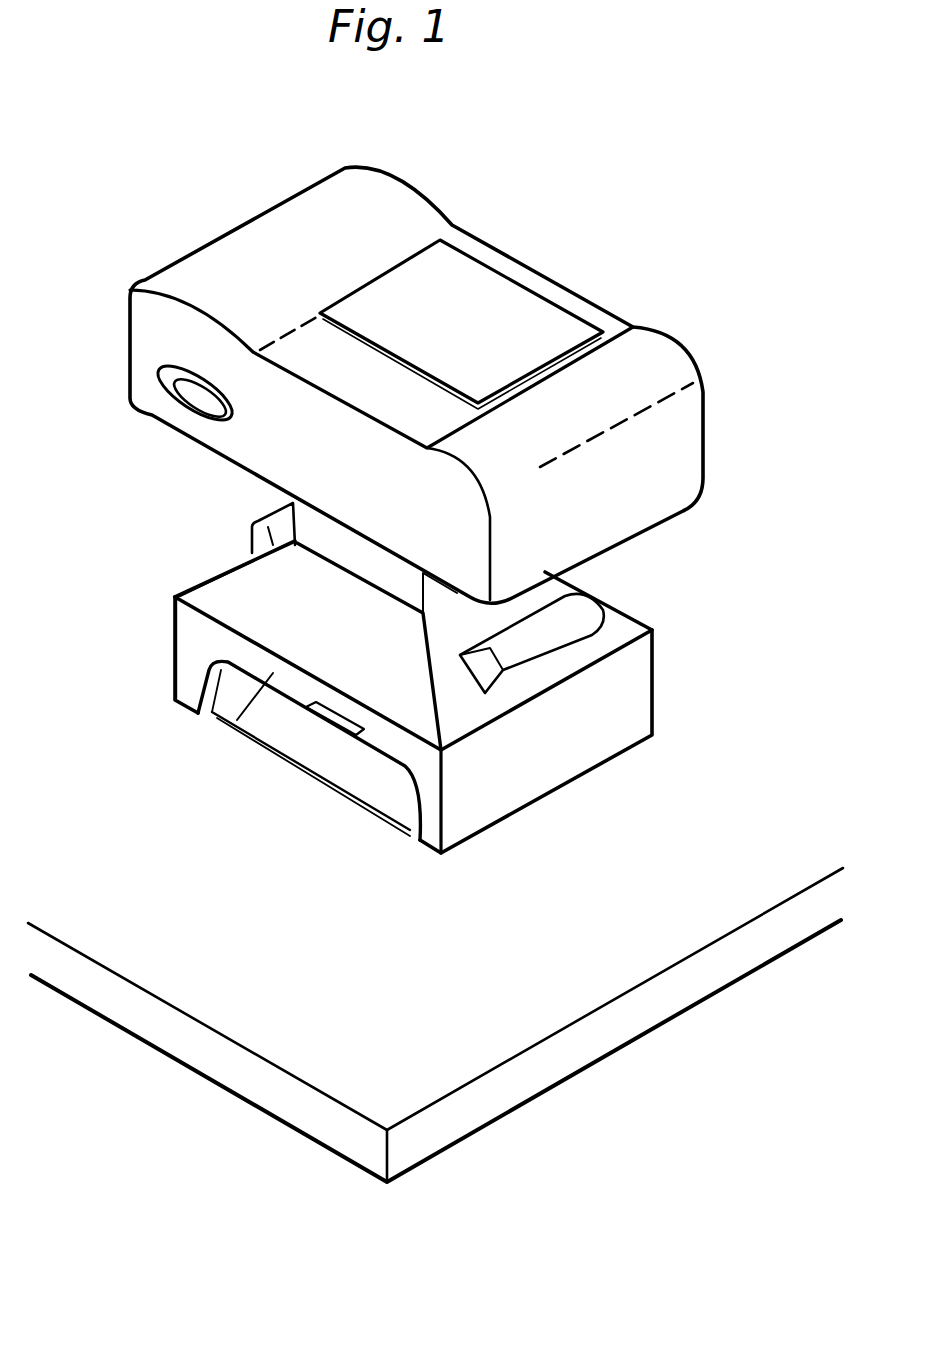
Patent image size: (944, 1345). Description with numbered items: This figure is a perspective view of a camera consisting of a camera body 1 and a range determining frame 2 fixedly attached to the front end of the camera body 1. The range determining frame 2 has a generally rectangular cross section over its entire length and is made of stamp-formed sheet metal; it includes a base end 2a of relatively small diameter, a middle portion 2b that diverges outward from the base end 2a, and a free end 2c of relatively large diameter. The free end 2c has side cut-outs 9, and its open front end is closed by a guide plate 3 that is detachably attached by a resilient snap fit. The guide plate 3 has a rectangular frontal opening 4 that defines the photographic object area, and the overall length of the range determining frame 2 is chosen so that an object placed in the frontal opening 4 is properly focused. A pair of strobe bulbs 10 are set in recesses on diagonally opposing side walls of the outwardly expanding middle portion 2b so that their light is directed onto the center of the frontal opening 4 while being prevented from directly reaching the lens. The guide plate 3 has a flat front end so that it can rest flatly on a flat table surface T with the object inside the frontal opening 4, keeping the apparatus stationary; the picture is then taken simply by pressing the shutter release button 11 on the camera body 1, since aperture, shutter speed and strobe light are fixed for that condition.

The camera body 1 is at (277, 207).
The range determining frame 2 is at (664, 613).
The base end 2a is at (338, 553).
The middle portion 2b is at (243, 573).
The free end 2c is at (174, 637).
The guide plate 3 is at (277, 753).
The frontal opening 4 is at (372, 737).
The side cut-outs 9 is at (240, 720).
The strobe bulbs 10 is at (261, 509).
The shutter release button 11 is at (192, 405).
The table surface T is at (703, 920).